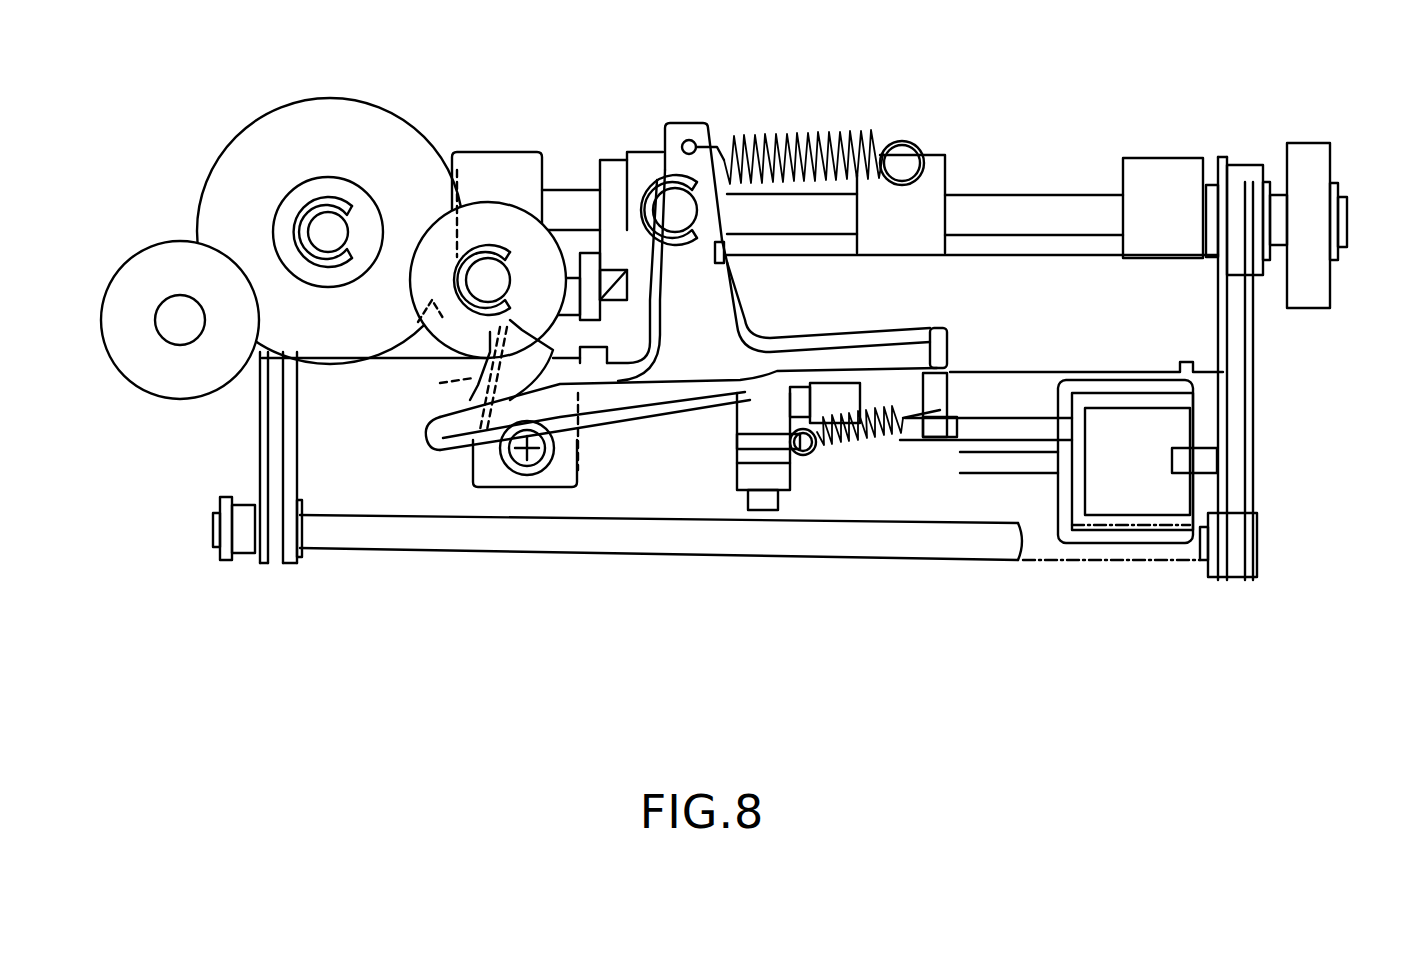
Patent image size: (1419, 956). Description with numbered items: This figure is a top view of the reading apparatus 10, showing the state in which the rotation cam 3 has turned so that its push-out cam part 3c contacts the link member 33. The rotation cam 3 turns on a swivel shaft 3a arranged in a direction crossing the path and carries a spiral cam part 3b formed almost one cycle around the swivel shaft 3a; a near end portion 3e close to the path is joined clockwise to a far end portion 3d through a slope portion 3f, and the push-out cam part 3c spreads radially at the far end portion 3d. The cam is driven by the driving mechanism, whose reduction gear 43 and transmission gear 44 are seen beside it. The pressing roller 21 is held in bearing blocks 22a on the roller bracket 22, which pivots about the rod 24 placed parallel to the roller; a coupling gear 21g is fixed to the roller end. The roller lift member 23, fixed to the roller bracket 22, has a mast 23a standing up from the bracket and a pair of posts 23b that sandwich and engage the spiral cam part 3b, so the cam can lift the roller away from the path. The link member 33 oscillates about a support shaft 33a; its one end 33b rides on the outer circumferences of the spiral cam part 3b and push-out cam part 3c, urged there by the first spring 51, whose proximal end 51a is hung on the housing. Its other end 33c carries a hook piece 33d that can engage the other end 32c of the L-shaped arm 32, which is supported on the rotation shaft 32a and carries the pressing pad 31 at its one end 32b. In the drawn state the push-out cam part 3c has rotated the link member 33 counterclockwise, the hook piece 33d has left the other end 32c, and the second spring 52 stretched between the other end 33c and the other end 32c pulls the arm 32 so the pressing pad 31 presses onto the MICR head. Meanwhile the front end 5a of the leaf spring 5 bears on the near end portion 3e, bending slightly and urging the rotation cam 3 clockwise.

The rotation cam 3 is at (458, 333).
The swivel shaft 3a is at (473, 281).
The spiral cam part 3b is at (467, 227).
The push-out cam part 3c is at (528, 370).
The far end portion 3d is at (497, 215).
The near end portion 3e is at (420, 325).
The slope portion 3f is at (440, 227).
The leaf spring 5 is at (509, 438).
The front end of the leaf spring 5a is at (438, 383).
The reading apparatus 10 is at (1035, 162).
The pressing roller 21 is at (1165, 158).
The coupling gear 21g is at (1320, 165).
The roller bracket 22 is at (1195, 316).
The bearing block 22a is at (1235, 165).
The roller lift member 23 is at (665, 315).
The mast 23a is at (612, 265).
The posts 23b is at (553, 295).
The rod 24 is at (400, 545).
The pressing pad 31 is at (1155, 433).
The arm 32 is at (863, 503).
The rotation shaft 32a is at (760, 510).
The one end of the arm 32b is at (1045, 465).
The other end of the arm 32c is at (740, 445).
The link member 33 is at (667, 276).
The support shaft 33a is at (655, 205).
The one end of the link member 33b is at (425, 430).
The other end of the link member 33c is at (935, 325).
The hook piece 33d is at (835, 395).
The reduction gear 43 is at (135, 265).
The transmission gear 44 is at (325, 100).
The first spring 51 is at (822, 125).
The proximal end of the first spring 51a is at (900, 140).
The second spring 52 is at (845, 460).